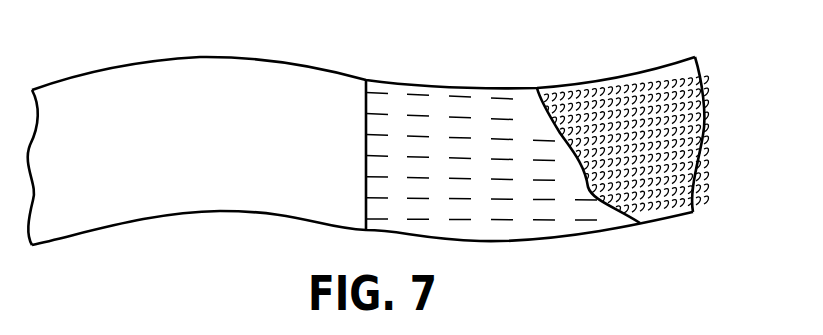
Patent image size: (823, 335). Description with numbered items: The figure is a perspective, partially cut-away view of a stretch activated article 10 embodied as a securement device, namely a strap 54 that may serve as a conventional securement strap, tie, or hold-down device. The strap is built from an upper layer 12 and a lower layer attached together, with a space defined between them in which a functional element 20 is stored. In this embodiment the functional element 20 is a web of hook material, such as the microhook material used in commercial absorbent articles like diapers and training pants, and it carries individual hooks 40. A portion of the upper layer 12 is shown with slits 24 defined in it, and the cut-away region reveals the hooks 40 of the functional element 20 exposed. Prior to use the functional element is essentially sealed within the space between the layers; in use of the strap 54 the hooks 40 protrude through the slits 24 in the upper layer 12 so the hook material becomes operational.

The article 10 is at (210, 228).
The upper layer 12 is at (512, 188).
The functional element 20 is at (635, 118).
The slits 24 is at (460, 225).
The hooks 40 is at (710, 117).
The strap 54 is at (185, 83).